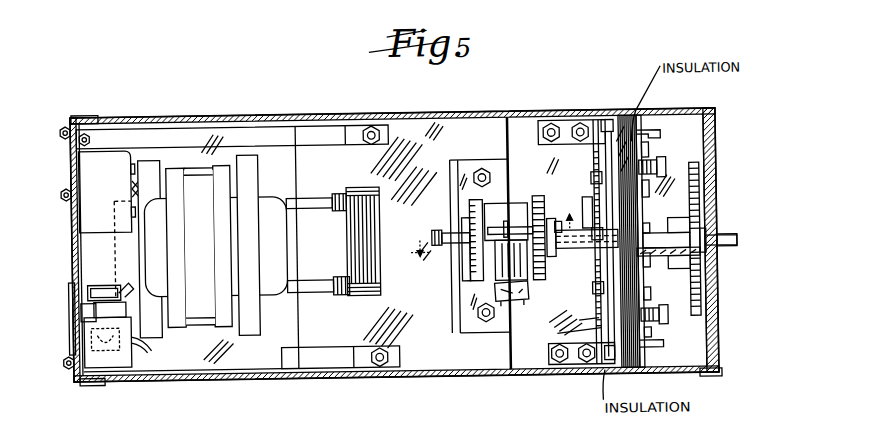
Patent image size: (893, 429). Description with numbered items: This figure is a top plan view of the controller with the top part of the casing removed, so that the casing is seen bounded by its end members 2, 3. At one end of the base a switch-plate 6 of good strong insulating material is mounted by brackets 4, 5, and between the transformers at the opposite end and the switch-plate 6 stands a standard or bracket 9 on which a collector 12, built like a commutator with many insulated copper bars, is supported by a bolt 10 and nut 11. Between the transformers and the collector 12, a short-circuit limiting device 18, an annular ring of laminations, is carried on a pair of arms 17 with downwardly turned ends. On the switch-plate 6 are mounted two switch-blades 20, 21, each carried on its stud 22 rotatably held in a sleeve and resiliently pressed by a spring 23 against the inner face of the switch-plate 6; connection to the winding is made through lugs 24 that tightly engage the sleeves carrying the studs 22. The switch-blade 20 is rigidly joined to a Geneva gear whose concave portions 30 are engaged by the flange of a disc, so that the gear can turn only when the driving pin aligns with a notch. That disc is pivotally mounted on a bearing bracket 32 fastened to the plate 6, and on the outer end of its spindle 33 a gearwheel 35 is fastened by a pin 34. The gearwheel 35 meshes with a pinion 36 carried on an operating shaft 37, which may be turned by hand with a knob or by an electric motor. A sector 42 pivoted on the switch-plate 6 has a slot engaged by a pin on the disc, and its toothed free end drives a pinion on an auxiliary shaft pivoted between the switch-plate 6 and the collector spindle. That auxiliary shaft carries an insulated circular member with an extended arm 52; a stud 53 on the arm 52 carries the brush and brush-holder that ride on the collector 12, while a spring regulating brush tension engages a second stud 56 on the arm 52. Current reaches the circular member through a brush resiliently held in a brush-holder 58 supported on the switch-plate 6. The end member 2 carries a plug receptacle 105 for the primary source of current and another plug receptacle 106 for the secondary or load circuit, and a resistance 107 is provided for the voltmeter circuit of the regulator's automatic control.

The end member 2 is at (75, 270).
The end member 3 is at (716, 152).
The bracket 4 is at (576, 372).
The bracket 5 is at (574, 127).
The switch-plate 6 is at (630, 103).
The standard or bracket 9 is at (456, 283).
The bolt 10 is at (432, 254).
The nut 11 is at (447, 266).
The collector 12 is at (458, 306).
The arms 17 is at (320, 217).
The short-circuit limiting device 18 is at (374, 251).
The switch-blade 20 is at (597, 311).
The switch-blade 21 is at (612, 128).
The stud 22 is at (666, 317).
The spring 23 is at (664, 160).
The lug 24 is at (651, 138).
The concave portions 30 is at (594, 158).
The bearing bracket 32 is at (672, 267).
The spindle 33 is at (670, 246).
The pin 34 is at (708, 247).
The gearwheel 35 is at (700, 208).
The pinion 36 is at (570, 335).
The operating shaft 37 is at (727, 257).
The sector 42 is at (546, 341).
The arm 52 is at (546, 221).
The stud 53 is at (542, 289).
The stud 56 is at (512, 227).
The brush-holder 58 is at (553, 264).
The plug receptacle 105 is at (93, 219).
The plug receptacle 106 is at (97, 284).
The resistance 107 is at (122, 363).